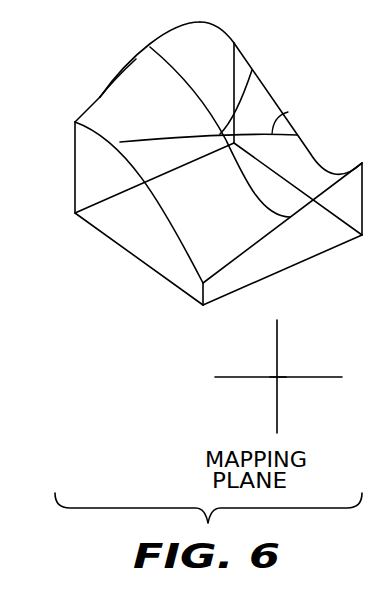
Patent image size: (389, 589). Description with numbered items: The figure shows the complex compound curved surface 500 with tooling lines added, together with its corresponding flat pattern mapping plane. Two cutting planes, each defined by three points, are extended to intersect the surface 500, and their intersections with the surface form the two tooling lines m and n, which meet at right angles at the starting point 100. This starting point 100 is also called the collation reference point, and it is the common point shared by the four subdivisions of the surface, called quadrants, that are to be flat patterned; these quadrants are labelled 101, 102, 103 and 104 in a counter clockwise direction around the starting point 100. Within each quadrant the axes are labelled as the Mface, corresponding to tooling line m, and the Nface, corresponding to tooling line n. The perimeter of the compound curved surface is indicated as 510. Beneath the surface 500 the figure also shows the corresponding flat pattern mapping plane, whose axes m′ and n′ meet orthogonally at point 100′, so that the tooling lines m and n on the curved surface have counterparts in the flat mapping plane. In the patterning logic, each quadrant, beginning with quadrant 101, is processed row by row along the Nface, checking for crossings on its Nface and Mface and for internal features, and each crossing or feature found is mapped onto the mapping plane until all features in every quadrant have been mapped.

The starting point 100 is at (253, 72).
The quadrant 101 is at (217, 42).
The quadrant 102 is at (95, 111).
The quadrant 103 is at (243, 242).
The quadrant 104 is at (312, 157).
The surface 500 is at (170, 32).
The perimeter of the compound curved surface 510 is at (102, 92).
The tooling line m is at (180, 78).
The tooling line n is at (288, 112).
The axis of mapping plane m′ is at (296, 374).
The axis of mapping plane n′ is at (292, 375).
The point 100′ is at (278, 378).